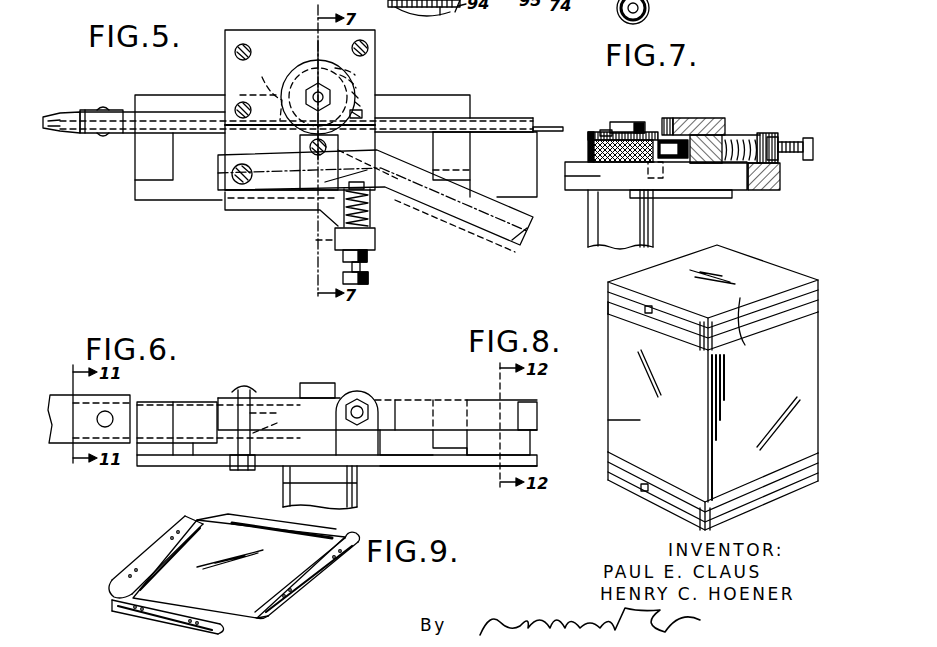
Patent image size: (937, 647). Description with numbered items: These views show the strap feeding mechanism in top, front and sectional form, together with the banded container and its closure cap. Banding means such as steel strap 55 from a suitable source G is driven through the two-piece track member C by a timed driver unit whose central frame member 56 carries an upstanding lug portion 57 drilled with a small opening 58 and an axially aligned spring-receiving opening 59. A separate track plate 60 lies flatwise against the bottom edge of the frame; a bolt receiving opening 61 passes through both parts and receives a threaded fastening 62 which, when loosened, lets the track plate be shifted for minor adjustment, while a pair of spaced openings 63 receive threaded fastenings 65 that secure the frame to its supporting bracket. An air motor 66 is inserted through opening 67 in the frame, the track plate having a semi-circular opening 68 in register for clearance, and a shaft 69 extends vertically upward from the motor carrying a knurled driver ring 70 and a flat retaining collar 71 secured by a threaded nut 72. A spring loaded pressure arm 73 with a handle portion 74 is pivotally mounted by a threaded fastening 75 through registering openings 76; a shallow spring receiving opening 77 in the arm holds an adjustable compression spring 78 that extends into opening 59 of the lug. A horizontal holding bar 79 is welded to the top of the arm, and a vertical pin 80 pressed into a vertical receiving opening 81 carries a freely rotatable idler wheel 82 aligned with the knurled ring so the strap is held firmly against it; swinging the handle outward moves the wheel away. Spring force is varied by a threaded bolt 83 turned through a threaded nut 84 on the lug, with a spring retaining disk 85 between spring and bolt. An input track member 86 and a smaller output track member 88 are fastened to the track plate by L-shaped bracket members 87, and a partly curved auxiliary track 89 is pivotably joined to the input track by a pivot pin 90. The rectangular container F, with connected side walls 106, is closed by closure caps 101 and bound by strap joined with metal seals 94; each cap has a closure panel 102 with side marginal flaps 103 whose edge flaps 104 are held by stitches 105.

In FIG. 5, the steel strap 55 is at (548, 125).
In FIG. 5, the central frame member 56 is at (247, 208).
In FIG. 5, the upstanding lug portion 57 is at (370, 250).
In FIG. 5, the small opening 58 is at (335, 244).
In FIG. 5, the spring-receiving opening 59 is at (376, 238).
In FIG. 5, the track plate 60 is at (537, 195).
In FIG. 5, the bolt receiving opening 61 is at (232, 108).
In FIG. 5, the threaded fastening 62 is at (238, 104).
In FIG. 5, the spaced openings 63 is at (248, 45).
In FIG. 5, the threaded fastenings 65 is at (237, 49).
In FIG. 5, the air motor 66 is at (355, 80).
In FIG. 5, the opening 67 is at (358, 92).
In FIG. 5, the semi-circular opening 68 is at (261, 89).
In FIG. 5, the shaft 69 is at (317, 75).
In FIG. 5, the knurled driver ring 70 is at (345, 70).
In FIG. 5, the flat retaining collar 71 is at (362, 100).
In FIG. 5, the threaded nut 72 is at (313, 88).
In FIG. 5, the spring loaded pressure arm 73 is at (276, 186).
In FIG. 5, the handle portion 74 is at (450, 235).
In FIG. 5, the threaded fastening 75 is at (231, 173).
In FIG. 6, the registering openings 76 is at (270, 422).
In FIG. 5, the spring receiving opening 77 is at (385, 163).
In FIG. 5, the compression spring 78 is at (372, 217).
In FIG. 5, the horizontal holding bar 79 is at (262, 220).
In FIG. 5, the vertical pin 80 is at (300, 138).
In FIG. 5, the vertical receiving opening 81 is at (338, 141).
In FIG. 5, the idler wheel 82 is at (361, 117).
In FIG. 5, the threaded bolt 83 is at (370, 280).
In FIG. 5, the threaded nut 84 is at (343, 256).
In FIG. 7, the spring receiving and retaining disk 85 is at (768, 192).
In FIG. 5, the input track member 86 is at (130, 140).
In FIG. 5, the L-shaped bracket member 87 is at (138, 172).
In FIG. 5, the output track member 88 is at (495, 118).
In FIG. 5, the auxiliary track 89 is at (55, 113).
In FIG. 5, the pivot pin 90 is at (104, 108).
In FIG. 8, the metal seals 94 is at (643, 310).
In FIG. 8, the closure caps 101 is at (758, 262).
In FIG. 8, the closure panel 102 is at (675, 268).
In FIG. 8, the side marginal flaps 103 is at (612, 300).
In FIG. 9, the edge flaps 104 is at (238, 518).
In FIG. 9, the stitches 105 is at (125, 578).
In FIG. 8, the side walls 106 is at (662, 351).
In FIG. 6, the two-piece track member C is at (58, 444).
In FIG. 8, the rectangular container F is at (618, 382).
In FIG. 7, the source G is at (651, 13).